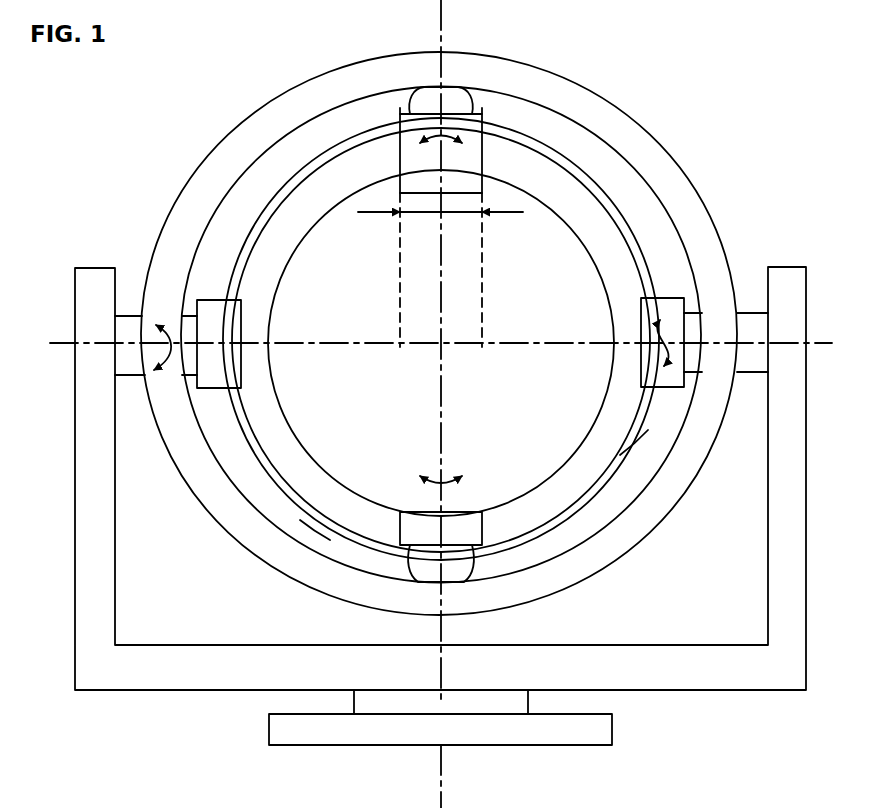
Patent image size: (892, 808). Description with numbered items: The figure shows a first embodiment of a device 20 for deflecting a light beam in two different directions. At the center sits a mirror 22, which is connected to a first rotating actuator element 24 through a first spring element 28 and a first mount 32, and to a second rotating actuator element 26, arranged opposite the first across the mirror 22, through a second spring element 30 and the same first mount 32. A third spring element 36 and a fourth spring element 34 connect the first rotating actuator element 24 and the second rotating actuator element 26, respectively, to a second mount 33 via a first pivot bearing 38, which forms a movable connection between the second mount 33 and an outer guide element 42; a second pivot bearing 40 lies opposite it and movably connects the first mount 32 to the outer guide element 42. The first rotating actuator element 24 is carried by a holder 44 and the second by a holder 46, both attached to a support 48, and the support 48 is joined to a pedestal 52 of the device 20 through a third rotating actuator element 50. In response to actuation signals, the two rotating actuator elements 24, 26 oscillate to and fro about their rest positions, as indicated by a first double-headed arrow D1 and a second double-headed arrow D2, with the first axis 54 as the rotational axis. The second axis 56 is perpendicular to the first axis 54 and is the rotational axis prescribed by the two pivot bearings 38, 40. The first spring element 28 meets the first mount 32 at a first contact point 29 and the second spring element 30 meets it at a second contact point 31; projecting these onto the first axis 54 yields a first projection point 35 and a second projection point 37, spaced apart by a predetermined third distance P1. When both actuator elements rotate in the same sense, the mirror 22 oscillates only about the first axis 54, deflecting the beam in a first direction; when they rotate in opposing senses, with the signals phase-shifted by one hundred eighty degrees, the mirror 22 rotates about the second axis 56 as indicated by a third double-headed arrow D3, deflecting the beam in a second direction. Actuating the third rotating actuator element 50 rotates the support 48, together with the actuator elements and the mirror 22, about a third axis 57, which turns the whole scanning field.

The device 20 is at (686, 82).
The mirror 22 is at (551, 310).
The first rotating actuator element 24 is at (668, 306).
The second rotating actuator element 26 is at (216, 300).
The first spring element 28 is at (565, 155).
The first contact point 29 is at (482, 114).
The second spring element 30 is at (291, 186).
The second contact point 31 is at (400, 114).
The first mount 32 is at (477, 157).
The second mount 33 is at (479, 519).
The fourth spring element 34 is at (316, 525).
The first projection point 35 is at (482, 347).
The third spring element 36 is at (637, 440).
The second projection point 37 is at (400, 347).
The first pivot bearing 38 is at (457, 569).
The second pivot bearing 40 is at (456, 96).
The outer guide element 42 is at (690, 179).
The holder 44 is at (750, 373).
The holder 46 is at (120, 316).
The support 48 is at (105, 615).
The third rotating actuator element 50 is at (489, 695).
The pedestal 52 is at (601, 719).
The first axis 54 is at (823, 343).
The second axis 56 is at (440, 297).
The third axis 57 is at (442, 758).
The first double-headed arrow D1 is at (645, 387).
The second double-headed arrow D2 is at (166, 355).
The third double-headed arrow D3 is at (435, 134).
The third distance P1 is at (467, 213).